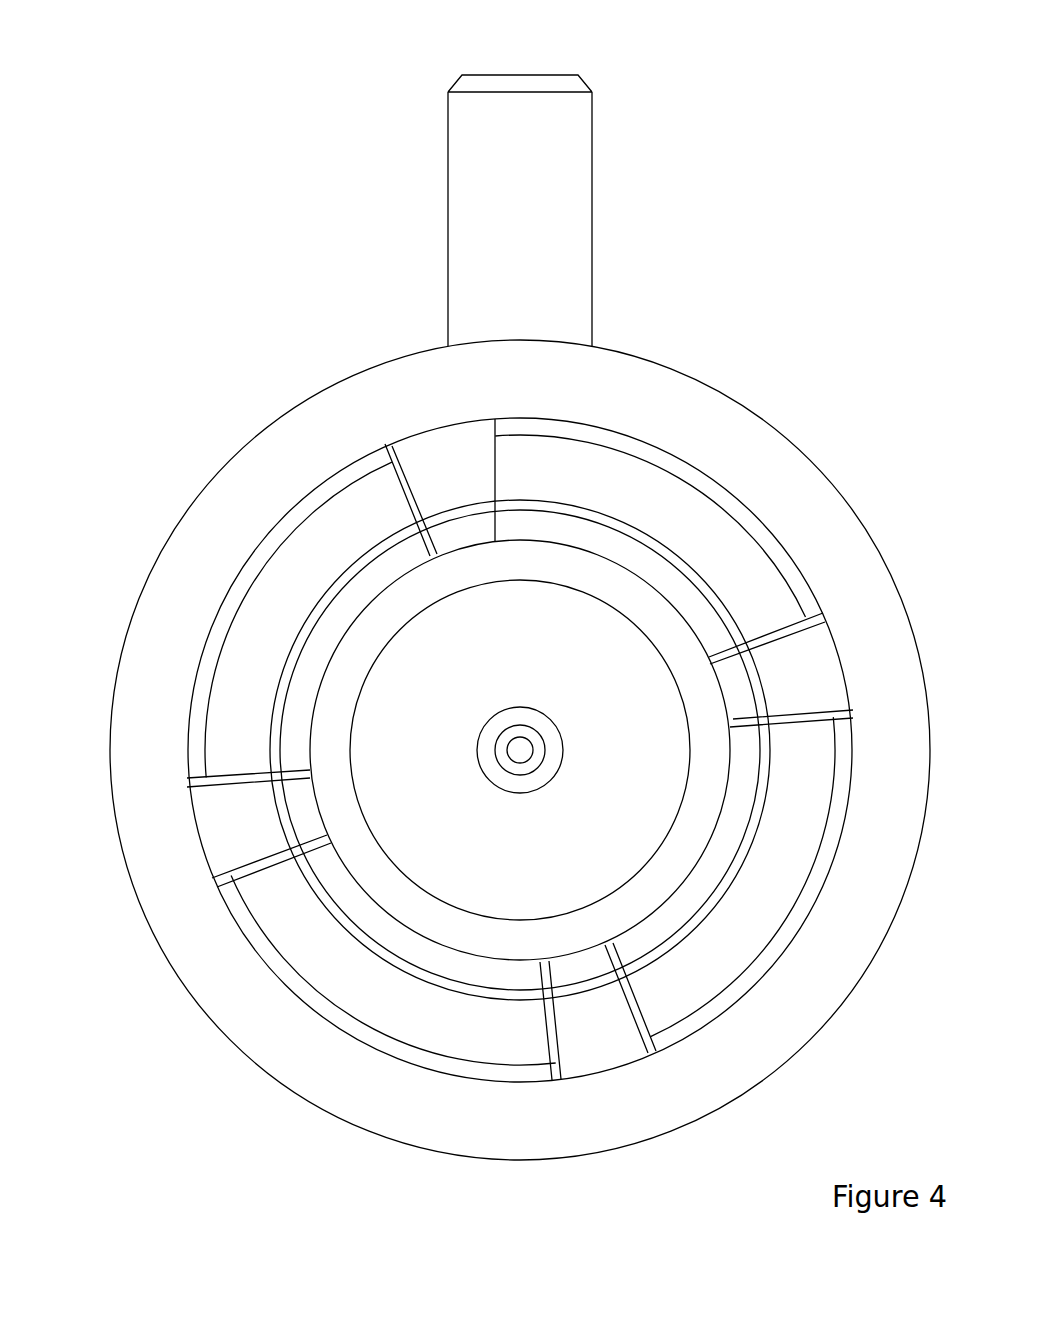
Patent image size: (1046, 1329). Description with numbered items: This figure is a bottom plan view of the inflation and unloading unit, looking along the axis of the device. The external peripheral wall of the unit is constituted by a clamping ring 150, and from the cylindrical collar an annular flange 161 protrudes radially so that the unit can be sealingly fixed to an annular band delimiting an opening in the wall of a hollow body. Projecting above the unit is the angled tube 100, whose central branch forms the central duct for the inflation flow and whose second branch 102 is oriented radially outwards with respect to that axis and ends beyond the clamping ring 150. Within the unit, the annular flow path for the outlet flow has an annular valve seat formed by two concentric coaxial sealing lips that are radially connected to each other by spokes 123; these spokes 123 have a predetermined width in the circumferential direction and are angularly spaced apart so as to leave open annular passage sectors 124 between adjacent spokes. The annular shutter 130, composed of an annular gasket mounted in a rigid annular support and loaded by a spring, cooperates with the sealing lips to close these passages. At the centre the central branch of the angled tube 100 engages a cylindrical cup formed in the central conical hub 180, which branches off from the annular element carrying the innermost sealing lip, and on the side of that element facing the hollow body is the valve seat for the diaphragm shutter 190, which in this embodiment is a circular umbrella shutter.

The angled tube 100 is at (563, 173).
The second branch 102 is at (573, 75).
The spokes 123 is at (470, 450).
The annular passage sectors 124 is at (700, 535).
The annular shutter 130 is at (454, 1019).
The clamping ring 150 is at (486, 750).
The annular flange 161 is at (772, 1067).
The central conical hub 180 is at (726, 838).
The diaphragm shutter 190 is at (415, 587).